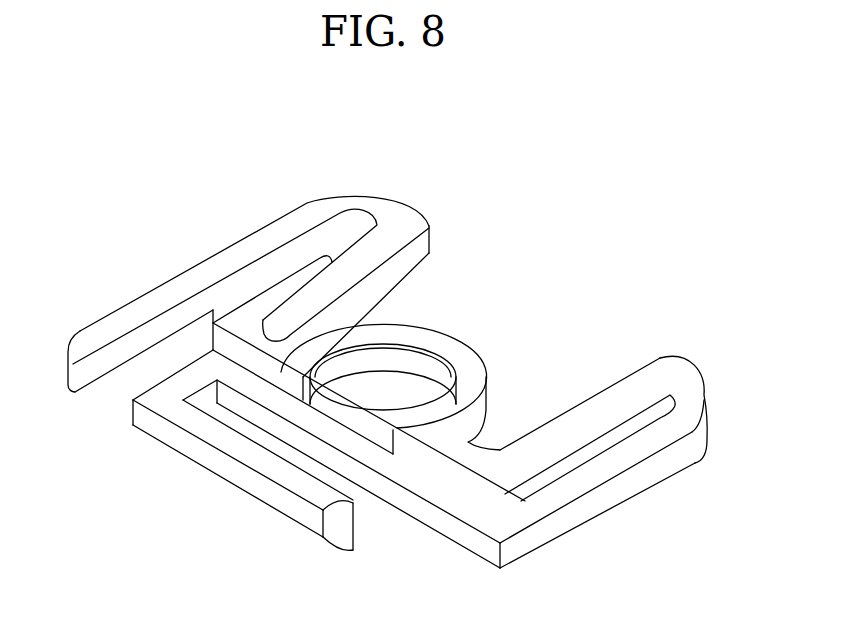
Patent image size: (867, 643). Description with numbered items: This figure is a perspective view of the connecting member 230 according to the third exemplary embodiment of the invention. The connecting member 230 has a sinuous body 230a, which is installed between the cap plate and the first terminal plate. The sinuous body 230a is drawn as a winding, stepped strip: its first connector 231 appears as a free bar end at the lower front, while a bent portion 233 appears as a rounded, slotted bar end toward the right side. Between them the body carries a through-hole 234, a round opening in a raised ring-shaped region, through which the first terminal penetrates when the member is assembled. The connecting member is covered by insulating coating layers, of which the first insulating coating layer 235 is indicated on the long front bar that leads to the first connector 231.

The coil structure 230 is at (523, 143).
The upper surface of coil structure 230a is at (641, 263).
The first end portion 231 is at (348, 512).
The second end portion 233 is at (697, 442).
The through hole 234 is at (390, 400).
The first bar portion 235 is at (252, 458).